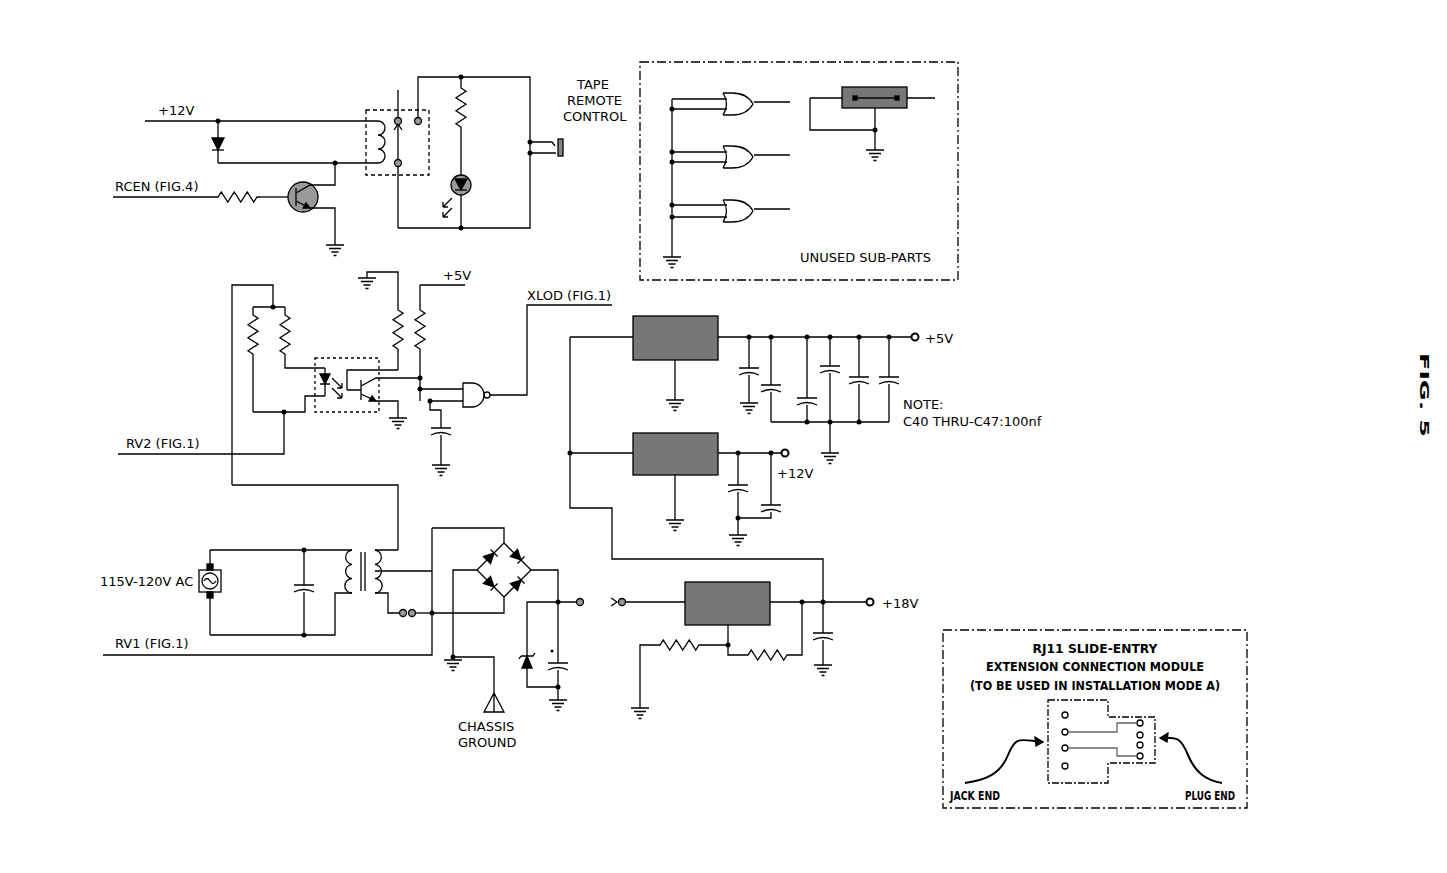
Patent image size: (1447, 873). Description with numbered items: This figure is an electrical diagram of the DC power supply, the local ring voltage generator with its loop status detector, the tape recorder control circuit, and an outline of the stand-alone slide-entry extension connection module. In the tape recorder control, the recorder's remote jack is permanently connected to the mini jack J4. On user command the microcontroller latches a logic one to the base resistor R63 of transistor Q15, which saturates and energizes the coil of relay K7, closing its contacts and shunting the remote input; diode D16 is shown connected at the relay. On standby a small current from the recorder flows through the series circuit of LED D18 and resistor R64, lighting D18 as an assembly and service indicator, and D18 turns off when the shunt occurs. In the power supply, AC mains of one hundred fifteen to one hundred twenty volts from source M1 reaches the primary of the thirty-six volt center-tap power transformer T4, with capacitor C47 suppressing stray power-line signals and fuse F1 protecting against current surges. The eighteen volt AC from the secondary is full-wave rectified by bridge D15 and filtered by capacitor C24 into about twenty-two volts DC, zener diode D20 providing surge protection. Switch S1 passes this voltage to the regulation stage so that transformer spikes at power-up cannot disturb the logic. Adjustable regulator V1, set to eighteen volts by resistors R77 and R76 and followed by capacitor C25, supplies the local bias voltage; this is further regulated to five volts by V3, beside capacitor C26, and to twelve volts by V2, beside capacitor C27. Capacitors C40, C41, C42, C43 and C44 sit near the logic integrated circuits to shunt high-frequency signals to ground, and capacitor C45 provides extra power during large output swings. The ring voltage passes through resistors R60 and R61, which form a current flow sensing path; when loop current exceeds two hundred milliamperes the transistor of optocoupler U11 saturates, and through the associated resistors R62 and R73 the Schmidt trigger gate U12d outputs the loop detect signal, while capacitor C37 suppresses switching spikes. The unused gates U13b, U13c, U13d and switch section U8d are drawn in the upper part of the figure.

The diode D16 is at (235, 142).
The relay K7 is at (381, 157).
The resistor R64 is at (487, 126).
The LED D18 is at (476, 193).
The mini jack J4 is at (569, 164).
The base resistor R63 is at (251, 189).
The transistor Q15 is at (297, 209).
The unused part of integrated circuit U13 U13b is at (733, 100).
The C4071 OR gate U13c is at (733, 154).
The C4071 OR gate U13d is at (733, 207).
The unused part of integrated circuit U8 U8d is at (878, 114).
The resistor R60 is at (216, 359).
The resistor R61 is at (313, 337).
The optocoupler U11 is at (363, 386).
The 1M resistor R62 is at (370, 321).
The 470k resistor R73 is at (455, 343).
The CD4093 NAND gate U12d is at (516, 365).
The capacitor C37 is at (463, 438).
The voltage regulator V3 is at (659, 355).
The 4.7uF capacitor C26 is at (731, 375).
The capacitor C40 is at (781, 379).
The capacitor C41 is at (799, 379).
The capacitor C42 is at (839, 400).
The capacitor C43 is at (850, 379).
The capacitor C44 is at (899, 379).
The voltage regulator V2 is at (646, 473).
The 4.7uF capacitor C27 is at (712, 499).
The capacitor C45 is at (796, 485).
The AC mains source M1 is at (222, 592).
The capacitor C47 is at (277, 592).
The power transformer T4 is at (352, 554).
The fuse F1 is at (390, 622).
The bridge D15 is at (503, 592).
The switch S1 is at (621, 585).
The capacitor C24 is at (586, 656).
The zener diode D20 is at (527, 644).
The adjustable voltage regulator V1 is at (749, 607).
The resistor R77 is at (679, 679).
The resistor R76 is at (765, 644).
The 1uF capacitor C25 is at (853, 639).